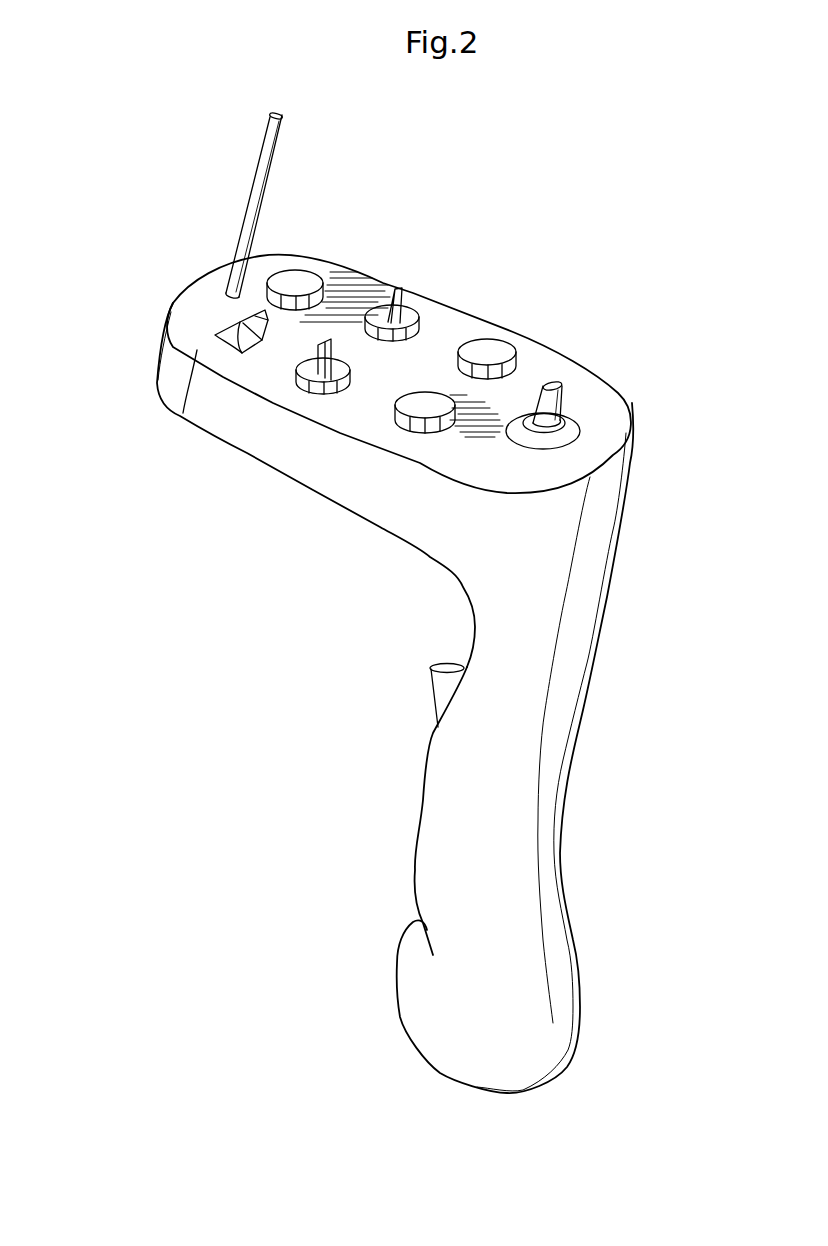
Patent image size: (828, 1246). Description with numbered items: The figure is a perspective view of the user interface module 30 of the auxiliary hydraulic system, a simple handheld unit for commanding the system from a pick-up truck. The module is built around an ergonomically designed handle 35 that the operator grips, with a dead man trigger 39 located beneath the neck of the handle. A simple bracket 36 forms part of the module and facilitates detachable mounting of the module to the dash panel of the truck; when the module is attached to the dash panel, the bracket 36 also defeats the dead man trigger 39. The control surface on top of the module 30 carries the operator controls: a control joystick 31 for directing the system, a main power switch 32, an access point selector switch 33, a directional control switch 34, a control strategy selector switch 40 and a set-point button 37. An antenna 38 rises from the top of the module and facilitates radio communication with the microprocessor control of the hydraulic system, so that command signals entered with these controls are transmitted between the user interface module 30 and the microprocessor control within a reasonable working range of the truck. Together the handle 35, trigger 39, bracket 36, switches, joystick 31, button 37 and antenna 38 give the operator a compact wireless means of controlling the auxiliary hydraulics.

The user interface module 30 is at (588, 252).
The control joystick 31 is at (563, 392).
The main power switch 32 is at (298, 277).
The access point selector switch 33 is at (405, 290).
The directional control switch 34 is at (223, 340).
The handle 35 is at (541, 818).
The bracket 36 is at (310, 477).
The set-point button 37 is at (497, 355).
The antenna 38 is at (273, 162).
The dead man trigger 39 is at (443, 693).
The control strategy selector switch 40 is at (307, 372).